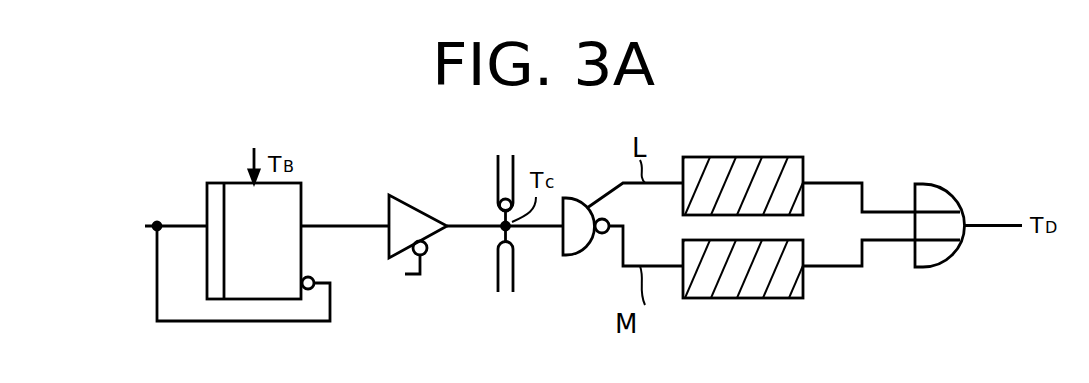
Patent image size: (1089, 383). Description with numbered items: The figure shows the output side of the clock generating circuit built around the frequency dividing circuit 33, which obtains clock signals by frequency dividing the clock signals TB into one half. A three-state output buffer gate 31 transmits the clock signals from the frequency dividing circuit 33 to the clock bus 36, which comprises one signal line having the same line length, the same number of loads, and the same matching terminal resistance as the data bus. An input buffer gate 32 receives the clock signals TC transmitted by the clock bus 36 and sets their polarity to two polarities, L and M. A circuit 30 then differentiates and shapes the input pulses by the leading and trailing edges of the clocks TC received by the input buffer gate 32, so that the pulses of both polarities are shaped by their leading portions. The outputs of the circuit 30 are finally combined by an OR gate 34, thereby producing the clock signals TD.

The circuit 30 is at (803, 255).
The 3-state output buffer gate 31 is at (388, 202).
The input buffer gate 32 is at (580, 256).
The frequency dividing circuit 33 is at (260, 285).
The OR gate 34 is at (940, 267).
The clock bus 36 is at (497, 170).